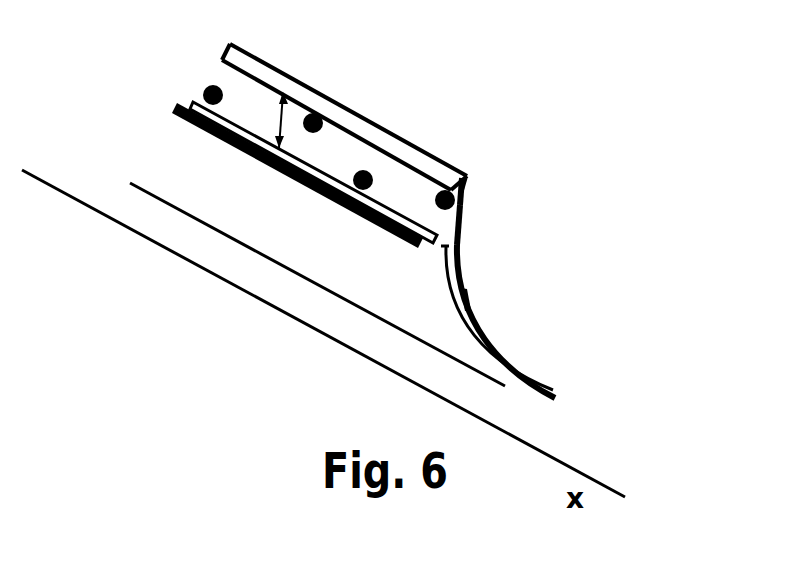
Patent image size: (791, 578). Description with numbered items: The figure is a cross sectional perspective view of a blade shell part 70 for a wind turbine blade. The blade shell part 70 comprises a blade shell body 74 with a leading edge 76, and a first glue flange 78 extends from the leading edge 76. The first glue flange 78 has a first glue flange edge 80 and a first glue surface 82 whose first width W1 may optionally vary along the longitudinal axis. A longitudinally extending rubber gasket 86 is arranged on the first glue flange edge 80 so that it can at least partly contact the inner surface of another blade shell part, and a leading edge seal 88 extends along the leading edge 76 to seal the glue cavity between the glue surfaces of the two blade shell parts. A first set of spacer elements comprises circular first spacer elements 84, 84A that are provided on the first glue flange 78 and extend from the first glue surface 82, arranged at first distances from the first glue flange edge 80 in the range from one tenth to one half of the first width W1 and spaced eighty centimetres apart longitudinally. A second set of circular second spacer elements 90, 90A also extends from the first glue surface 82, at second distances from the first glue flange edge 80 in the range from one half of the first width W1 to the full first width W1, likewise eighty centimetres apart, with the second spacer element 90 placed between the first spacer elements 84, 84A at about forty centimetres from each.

The blade shell part 70 is at (622, 196).
The blade shell body 74 is at (490, 360).
The leading edge 76 is at (457, 257).
The first glue flange 78 is at (459, 218).
The first glue flange edge 80 is at (465, 187).
The first glue surface 82 is at (285, 175).
The first spacer element 84 is at (458, 174).
The first spacer element 84A is at (342, 108).
The rubber gasket 86 is at (366, 120).
The leading edge seal 88 is at (220, 143).
The second spacer element 90 is at (363, 178).
The second spacer element 90A is at (204, 95).
The first width W1 is at (280, 108).